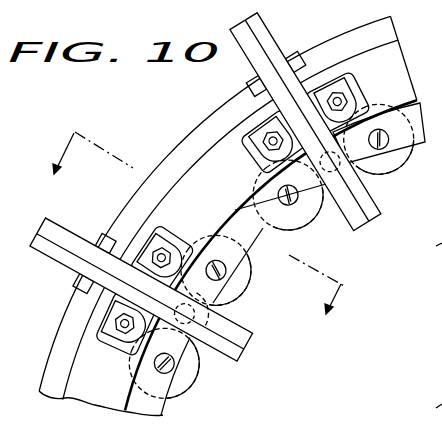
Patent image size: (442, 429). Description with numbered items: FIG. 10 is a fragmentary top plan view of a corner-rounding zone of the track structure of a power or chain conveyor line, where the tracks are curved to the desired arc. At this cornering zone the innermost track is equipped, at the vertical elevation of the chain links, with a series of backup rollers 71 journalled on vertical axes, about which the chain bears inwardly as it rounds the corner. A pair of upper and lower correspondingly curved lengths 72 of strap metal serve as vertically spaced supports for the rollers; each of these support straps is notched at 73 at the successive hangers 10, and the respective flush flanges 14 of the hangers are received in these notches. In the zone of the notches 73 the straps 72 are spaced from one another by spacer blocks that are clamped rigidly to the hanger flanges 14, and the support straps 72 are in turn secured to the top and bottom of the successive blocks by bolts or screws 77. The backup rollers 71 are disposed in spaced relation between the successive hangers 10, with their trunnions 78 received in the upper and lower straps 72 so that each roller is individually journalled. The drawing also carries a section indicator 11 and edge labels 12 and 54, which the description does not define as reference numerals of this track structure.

The hanger 10 is at (100, 231).
The section line 11- 11 is at (200, 225).
The track rail 12 is at (428, 222).
The flush flange 14 is at (65, 253).
The frame member 54 is at (433, 355).
The backup roller 71 is at (410, 158).
The curved length of strap metal 72 is at (254, 237).
The notch 73 is at (330, 174).
The bolt or screw 77 is at (205, 316).
The trunnion 78 is at (278, 193).